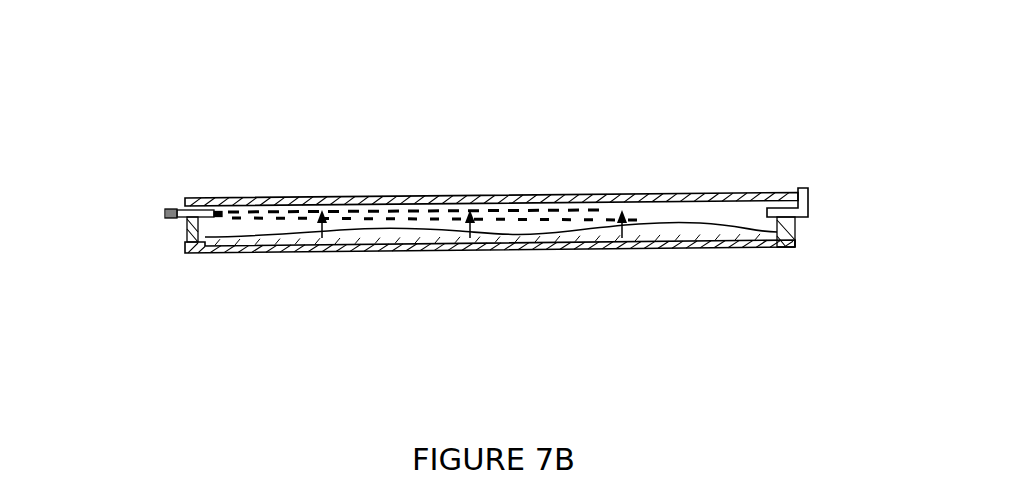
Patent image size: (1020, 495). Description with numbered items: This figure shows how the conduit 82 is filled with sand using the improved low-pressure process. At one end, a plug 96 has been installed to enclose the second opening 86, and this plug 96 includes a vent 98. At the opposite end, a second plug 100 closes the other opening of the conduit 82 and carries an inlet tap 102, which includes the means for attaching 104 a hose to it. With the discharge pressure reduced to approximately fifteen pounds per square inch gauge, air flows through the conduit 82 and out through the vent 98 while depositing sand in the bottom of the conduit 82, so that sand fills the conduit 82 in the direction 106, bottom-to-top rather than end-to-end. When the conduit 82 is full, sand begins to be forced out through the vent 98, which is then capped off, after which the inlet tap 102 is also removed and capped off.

The conduit 82 is at (575, 195).
The means for attaching 104 is at (166, 210).
The inlet tap 102 is at (173, 228).
The second plug 100 is at (177, 238).
The vent 98 is at (810, 206).
The second opening 86 is at (810, 227).
The plug 96 is at (834, 243).
The direction 106 is at (533, 245).